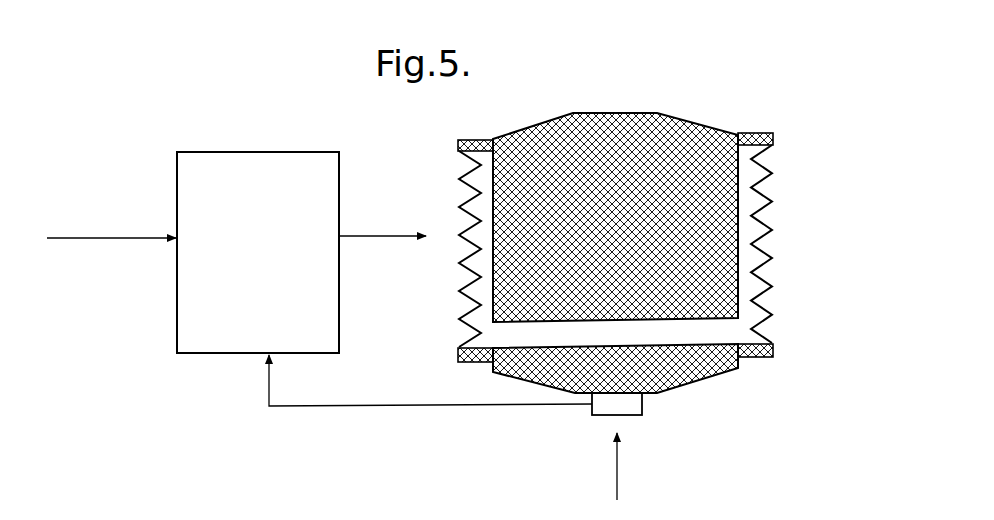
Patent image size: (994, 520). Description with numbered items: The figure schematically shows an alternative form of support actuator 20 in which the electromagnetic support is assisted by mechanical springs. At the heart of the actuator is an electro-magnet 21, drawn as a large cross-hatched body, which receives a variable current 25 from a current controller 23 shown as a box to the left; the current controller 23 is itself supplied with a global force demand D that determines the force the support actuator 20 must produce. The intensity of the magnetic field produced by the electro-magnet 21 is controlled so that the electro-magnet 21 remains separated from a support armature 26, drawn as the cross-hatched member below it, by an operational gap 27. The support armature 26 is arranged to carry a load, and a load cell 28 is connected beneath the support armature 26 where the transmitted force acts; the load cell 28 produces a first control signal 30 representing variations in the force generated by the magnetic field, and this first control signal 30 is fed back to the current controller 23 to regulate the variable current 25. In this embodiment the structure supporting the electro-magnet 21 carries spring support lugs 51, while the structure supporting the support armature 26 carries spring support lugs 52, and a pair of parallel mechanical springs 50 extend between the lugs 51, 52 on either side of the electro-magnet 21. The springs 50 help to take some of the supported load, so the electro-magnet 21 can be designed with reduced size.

The support actuator 20 is at (103, 457).
The electro-magnet 21 is at (656, 113).
The current controller 23 is at (268, 247).
The variable current 25 is at (414, 240).
The support armature 26 is at (706, 377).
The operational gap 27 is at (735, 327).
The load cell 28 is at (597, 418).
The first control signal 30 is at (456, 407).
The mechanical springs 50 is at (456, 178).
The spring support lugs 51 is at (468, 139).
The spring support lugs 52 is at (458, 354).